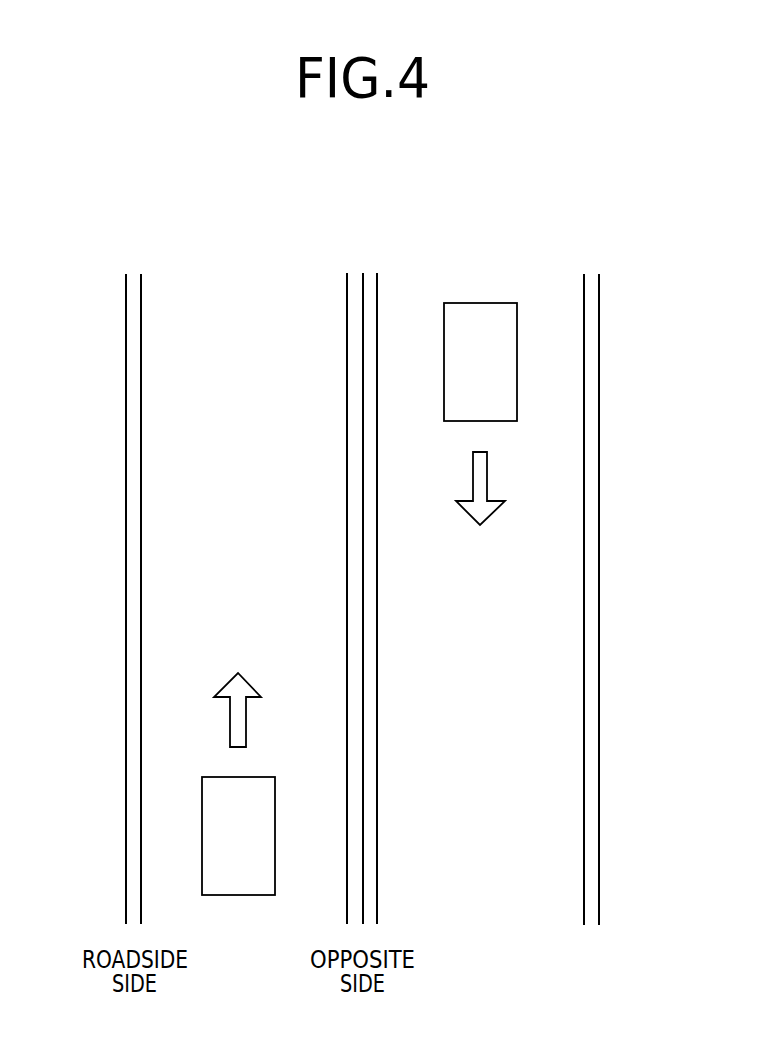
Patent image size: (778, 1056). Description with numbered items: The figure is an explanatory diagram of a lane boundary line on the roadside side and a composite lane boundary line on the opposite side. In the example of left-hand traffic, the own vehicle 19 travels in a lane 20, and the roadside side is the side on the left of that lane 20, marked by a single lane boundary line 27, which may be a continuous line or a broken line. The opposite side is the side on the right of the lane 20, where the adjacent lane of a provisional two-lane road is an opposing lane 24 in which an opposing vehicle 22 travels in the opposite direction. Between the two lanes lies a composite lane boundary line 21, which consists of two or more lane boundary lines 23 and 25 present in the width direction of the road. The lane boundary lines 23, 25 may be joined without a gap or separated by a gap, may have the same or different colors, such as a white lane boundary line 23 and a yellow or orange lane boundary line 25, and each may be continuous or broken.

The own vehicle 19 is at (263, 836).
The lane 20 is at (182, 632).
The composite lane boundary line 21 is at (363, 531).
The opposing vehicle 22 is at (509, 364).
The lane boundary line 23 is at (372, 303).
The opposing lane 24 is at (540, 630).
The lane boundary line 25 is at (352, 303).
The single lane boundary line 27 is at (134, 313).